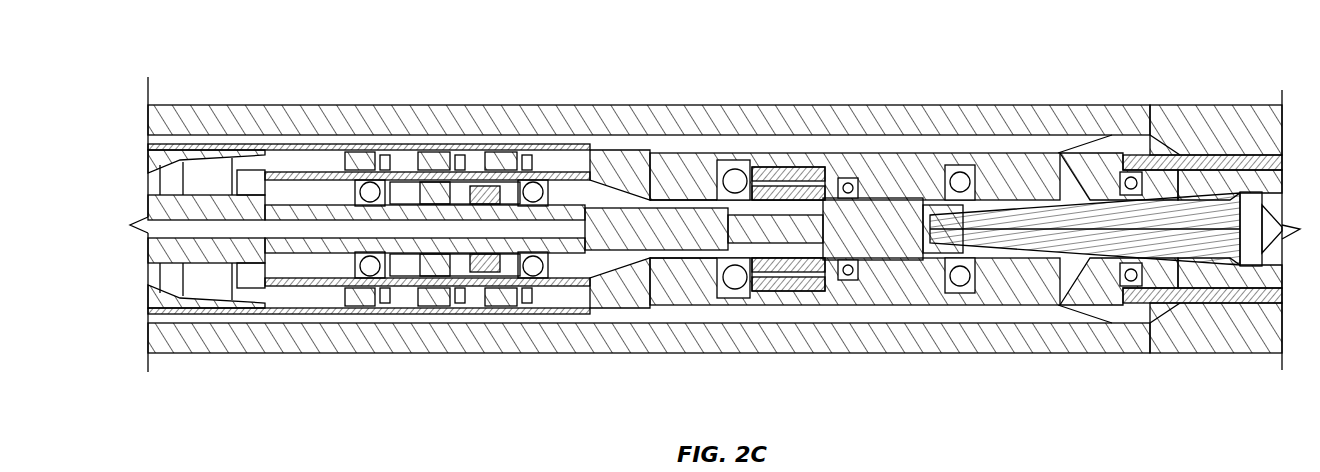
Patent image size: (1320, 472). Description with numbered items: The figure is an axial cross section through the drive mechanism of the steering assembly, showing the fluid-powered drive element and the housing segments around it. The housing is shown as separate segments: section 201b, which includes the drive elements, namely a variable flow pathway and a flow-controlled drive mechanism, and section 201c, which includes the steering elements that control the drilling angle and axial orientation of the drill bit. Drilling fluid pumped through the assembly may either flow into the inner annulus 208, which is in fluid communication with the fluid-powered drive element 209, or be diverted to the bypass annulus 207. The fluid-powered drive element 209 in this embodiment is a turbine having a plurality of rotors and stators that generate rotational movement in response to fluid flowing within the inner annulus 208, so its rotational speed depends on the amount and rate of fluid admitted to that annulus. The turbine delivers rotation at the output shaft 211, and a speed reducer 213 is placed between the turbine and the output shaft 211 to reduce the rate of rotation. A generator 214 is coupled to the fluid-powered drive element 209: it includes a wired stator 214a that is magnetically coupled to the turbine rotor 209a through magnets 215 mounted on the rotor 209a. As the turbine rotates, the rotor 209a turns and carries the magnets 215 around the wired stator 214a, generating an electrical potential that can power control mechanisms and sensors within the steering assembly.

The section 201b is at (238, 100).
The section 201c is at (1236, 100).
The bypass annulus 207 is at (417, 144).
The inner annulus 208 is at (151, 172).
The fluid-powered drive element 209 is at (360, 306).
The rotor 209a is at (537, 280).
The output shaft 211 is at (1088, 200).
The speed reducer 213 is at (792, 167).
The generator 214 is at (445, 272).
The wired stator 214a is at (478, 286).
The magnets 215 is at (507, 272).